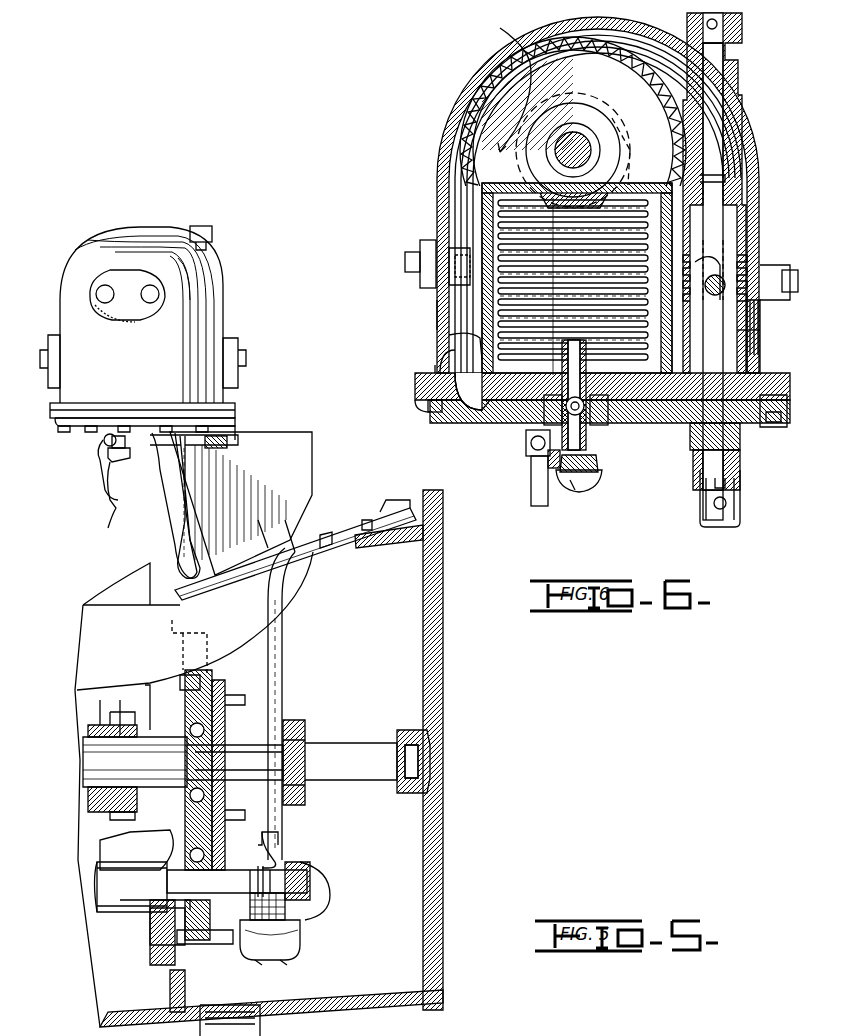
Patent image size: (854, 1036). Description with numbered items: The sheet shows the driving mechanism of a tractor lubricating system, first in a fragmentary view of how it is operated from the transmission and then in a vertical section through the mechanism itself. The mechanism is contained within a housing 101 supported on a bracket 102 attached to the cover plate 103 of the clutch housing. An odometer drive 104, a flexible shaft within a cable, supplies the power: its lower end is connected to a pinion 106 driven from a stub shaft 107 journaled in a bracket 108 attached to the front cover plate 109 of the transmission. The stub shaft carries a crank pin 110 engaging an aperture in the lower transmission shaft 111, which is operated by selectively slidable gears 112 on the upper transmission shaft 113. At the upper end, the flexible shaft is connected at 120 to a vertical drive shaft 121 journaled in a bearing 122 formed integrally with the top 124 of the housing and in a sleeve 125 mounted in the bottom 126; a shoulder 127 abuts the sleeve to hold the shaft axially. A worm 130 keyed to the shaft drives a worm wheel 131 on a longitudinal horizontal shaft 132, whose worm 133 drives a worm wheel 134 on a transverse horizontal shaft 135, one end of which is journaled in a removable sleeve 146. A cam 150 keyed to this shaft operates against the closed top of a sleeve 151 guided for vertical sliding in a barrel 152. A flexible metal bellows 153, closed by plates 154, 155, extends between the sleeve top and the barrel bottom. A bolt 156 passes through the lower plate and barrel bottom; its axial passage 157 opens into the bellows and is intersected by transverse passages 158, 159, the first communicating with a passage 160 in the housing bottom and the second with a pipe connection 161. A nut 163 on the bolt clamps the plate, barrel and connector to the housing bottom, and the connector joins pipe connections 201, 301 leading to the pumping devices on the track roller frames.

In FIG. 6, the housing 101 is at (437, 176).
In FIG. 5, the housing 101 is at (108, 240).
In FIG. 5, the bracket 102 is at (240, 490).
In FIG. 5, the cover plate 103 is at (340, 530).
In FIG. 6, the odometer drive 104 is at (736, 516).
In FIG. 5, the odometer drive 104 is at (268, 580).
In FIG. 5, the pinion 106 is at (312, 906).
In FIG. 5, the stub shaft 107 is at (312, 878).
In FIG. 5, the bracket 108 is at (305, 928).
In FIG. 5, the front cover plate 109 is at (200, 950).
In FIG. 5, the crank pin 110 is at (262, 862).
In FIG. 5, the lower transmission shaft 111 is at (140, 898).
In FIG. 5, the selectively slidable gears 112 is at (90, 730).
In FIG. 5, the upper transmission shaft 113 is at (95, 775).
In FIG. 6, the connection 120 is at (730, 488).
In FIG. 6, the vertical drive shaft 121 is at (715, 462).
In FIG. 6, the bearing 122 is at (740, 240).
In FIG. 6, the top 124 is at (478, 90).
In FIG. 5, the top 124 is at (163, 228).
In FIG. 6, the sleeve 125 is at (742, 438).
In FIG. 5, the sleeve 125 is at (238, 437).
In FIG. 6, the bottom 126 is at (415, 400).
In FIG. 5, the bottom 126 is at (96, 426).
In FIG. 6, the shoulder 127 is at (722, 312).
In FIG. 6, the worm 130 is at (730, 265).
In FIG. 6, the worm wheel 131 is at (720, 348).
In FIG. 6, the longitudinal horizontal shaft 132 is at (446, 264).
In FIG. 6, the worm 133 is at (460, 338).
In FIG. 6, the worm wheel 134 is at (495, 83).
In FIG. 6, the transverse horizontal shaft 135 is at (568, 142).
In FIG. 5, the removable sleeve 146 is at (137, 318).
In FIG. 6, the cam 150 is at (592, 112).
In FIG. 6, the sleeve 151 is at (520, 183).
In FIG. 6, the barrel 152 is at (482, 222).
In FIG. 6, the flexible metal bellows 153 is at (505, 300).
In FIG. 6, the plate 154 is at (628, 190).
In FIG. 6, the plate 155 is at (488, 412).
In FIG. 6, the bolt 156 is at (590, 440).
In FIG. 6, the passage 157 is at (590, 478).
In FIG. 6, the transverse passage 158 is at (598, 425).
In FIG. 6, the transverse passage 159 is at (548, 462).
In FIG. 6, the passage 160 is at (566, 408).
In FIG. 6, the pipe connection 161 is at (528, 456).
In FIG. 5, the pipe connection 161 is at (104, 447).
In FIG. 6, the nut 163 is at (580, 490).
In FIG. 5, the nut 163 is at (112, 460).
In FIG. 5, the pipe connection 201 is at (110, 524).
In FIG. 6, the pipe connection 301 is at (536, 505).